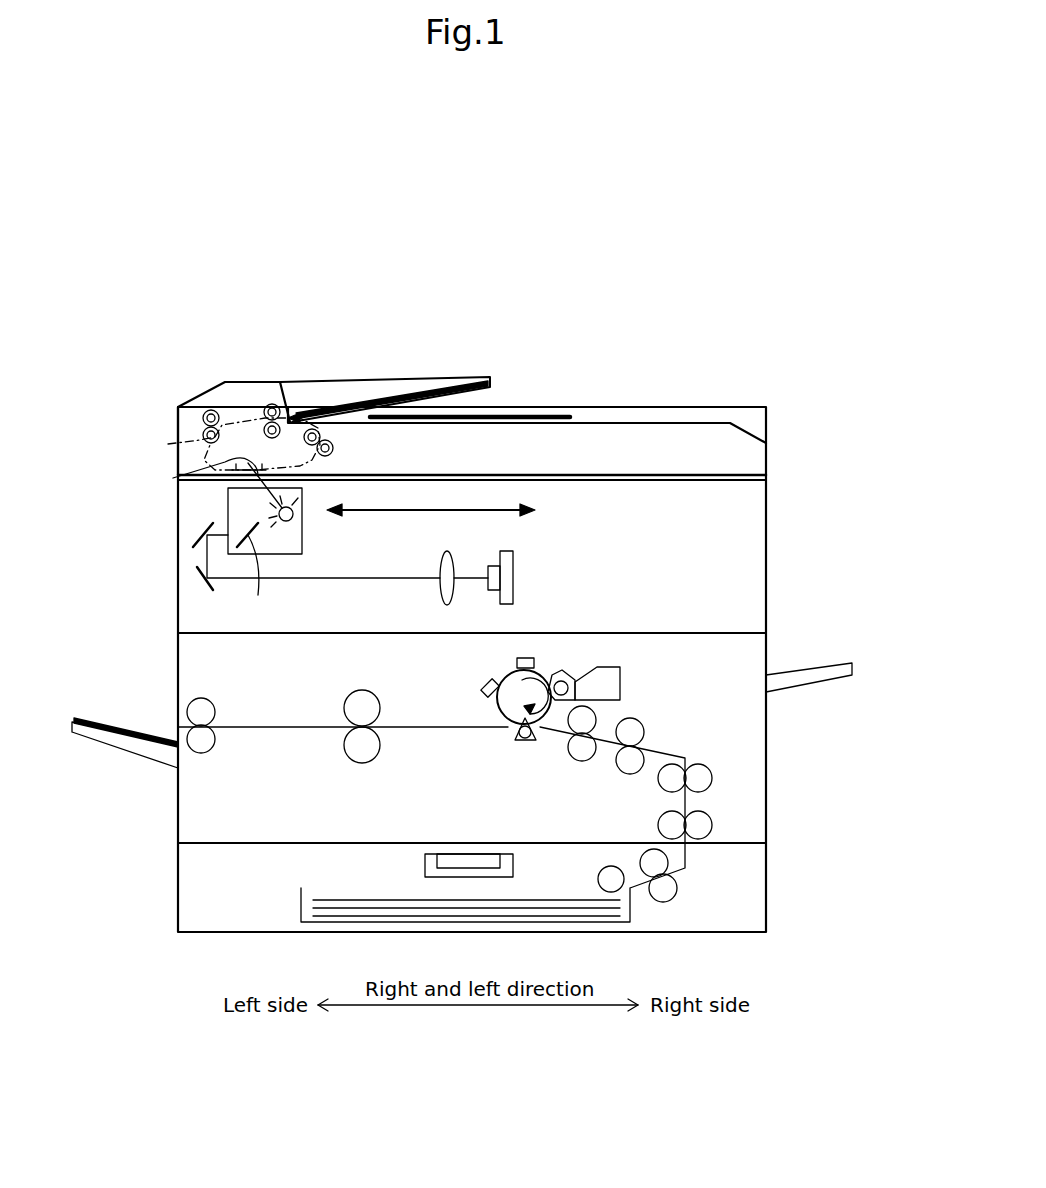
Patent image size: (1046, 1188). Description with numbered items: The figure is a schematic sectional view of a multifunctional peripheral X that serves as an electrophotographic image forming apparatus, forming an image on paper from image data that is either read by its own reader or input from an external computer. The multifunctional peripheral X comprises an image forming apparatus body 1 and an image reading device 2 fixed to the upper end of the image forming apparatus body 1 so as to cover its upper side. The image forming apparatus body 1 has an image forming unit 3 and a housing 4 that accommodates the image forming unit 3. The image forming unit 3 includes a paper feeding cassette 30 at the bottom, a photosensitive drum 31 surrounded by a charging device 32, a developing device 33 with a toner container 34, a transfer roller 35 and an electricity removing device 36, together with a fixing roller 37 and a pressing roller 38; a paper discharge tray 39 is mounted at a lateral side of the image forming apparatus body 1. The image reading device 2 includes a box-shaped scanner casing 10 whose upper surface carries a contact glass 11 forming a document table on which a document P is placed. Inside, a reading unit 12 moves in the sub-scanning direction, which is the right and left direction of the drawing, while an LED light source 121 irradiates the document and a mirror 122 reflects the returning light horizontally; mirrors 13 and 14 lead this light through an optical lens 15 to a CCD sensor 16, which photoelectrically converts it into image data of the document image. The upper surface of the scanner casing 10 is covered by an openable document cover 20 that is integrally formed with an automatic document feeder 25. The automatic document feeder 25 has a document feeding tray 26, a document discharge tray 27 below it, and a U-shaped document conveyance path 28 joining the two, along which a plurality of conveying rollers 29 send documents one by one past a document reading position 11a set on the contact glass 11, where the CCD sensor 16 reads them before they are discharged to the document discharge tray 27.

The image forming apparatus body 1 is at (770, 822).
The image reading device 2 is at (778, 582).
The image forming unit 3 is at (676, 722).
The housing 4 is at (766, 772).
The scanner casing 10 is at (766, 620).
The contact glass 11 is at (590, 480).
The document reading position 11a is at (188, 476).
The reading unit 12 is at (302, 500).
The LED light source 121 is at (293, 518).
The mirror 122 is at (261, 570).
The mirror 13 is at (197, 538).
The mirror 14 is at (197, 578).
The optical lens 15 is at (440, 560).
The CCD sensor 16 is at (500, 558).
The document cover 20 is at (766, 463).
The automatic document feeder 25 is at (518, 357).
The document feeding tray 26 is at (444, 384).
The document discharge tray 27 is at (468, 418).
The document conveyance path 28 is at (170, 446).
The conveying rollers 29 is at (208, 412).
The paper feeding cassette 30 is at (630, 908).
The photosensitive drum 31 is at (504, 712).
The charging device 32 is at (517, 663).
The developing device 33 is at (562, 675).
The toner container 34 is at (620, 683).
The transfer roller 35 is at (525, 742).
The electricity removing device 36 is at (482, 682).
The fixing roller 37 is at (360, 688).
The pressing roller 38 is at (350, 757).
The paper discharge tray 39 is at (150, 762).
The multifunctional peripheral X is at (150, 378).
The document P is at (388, 408).